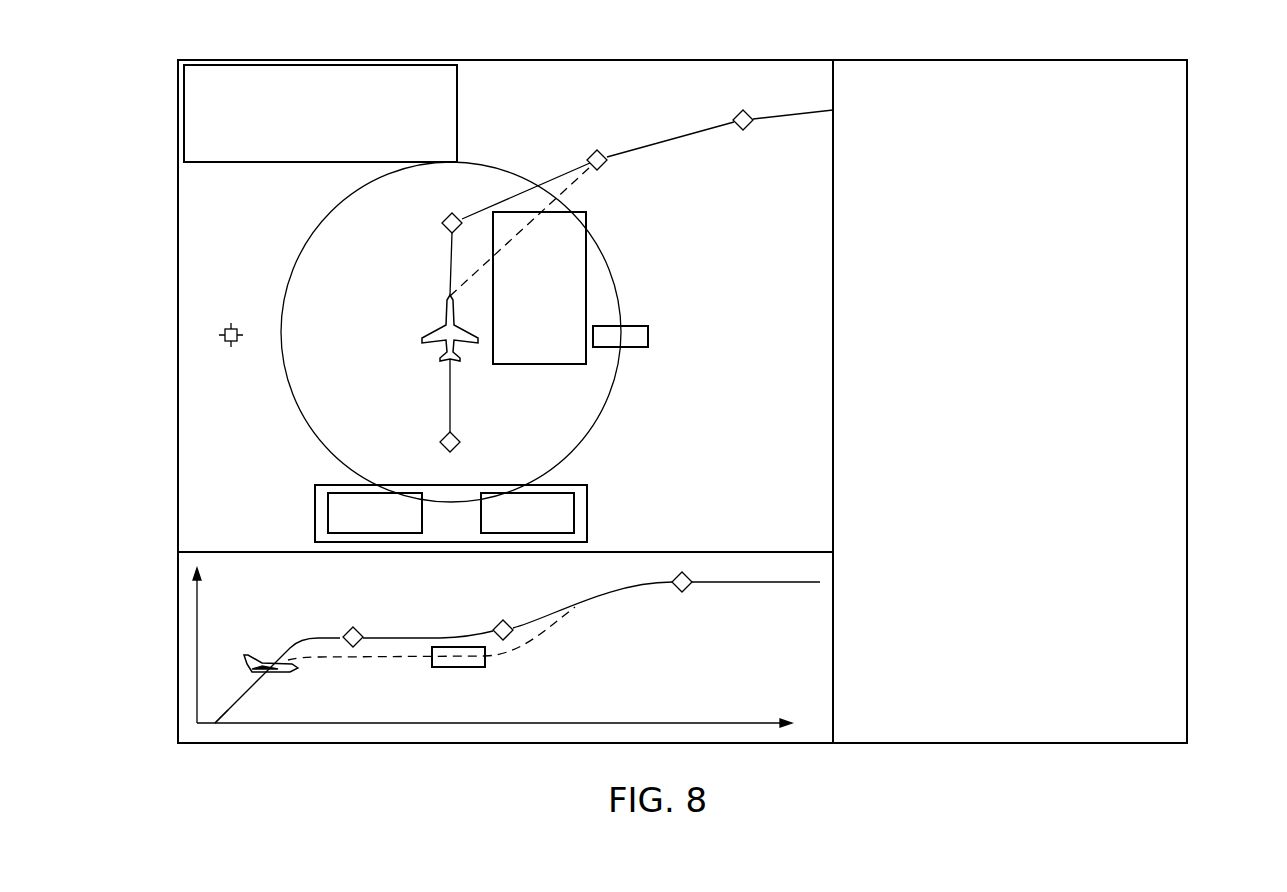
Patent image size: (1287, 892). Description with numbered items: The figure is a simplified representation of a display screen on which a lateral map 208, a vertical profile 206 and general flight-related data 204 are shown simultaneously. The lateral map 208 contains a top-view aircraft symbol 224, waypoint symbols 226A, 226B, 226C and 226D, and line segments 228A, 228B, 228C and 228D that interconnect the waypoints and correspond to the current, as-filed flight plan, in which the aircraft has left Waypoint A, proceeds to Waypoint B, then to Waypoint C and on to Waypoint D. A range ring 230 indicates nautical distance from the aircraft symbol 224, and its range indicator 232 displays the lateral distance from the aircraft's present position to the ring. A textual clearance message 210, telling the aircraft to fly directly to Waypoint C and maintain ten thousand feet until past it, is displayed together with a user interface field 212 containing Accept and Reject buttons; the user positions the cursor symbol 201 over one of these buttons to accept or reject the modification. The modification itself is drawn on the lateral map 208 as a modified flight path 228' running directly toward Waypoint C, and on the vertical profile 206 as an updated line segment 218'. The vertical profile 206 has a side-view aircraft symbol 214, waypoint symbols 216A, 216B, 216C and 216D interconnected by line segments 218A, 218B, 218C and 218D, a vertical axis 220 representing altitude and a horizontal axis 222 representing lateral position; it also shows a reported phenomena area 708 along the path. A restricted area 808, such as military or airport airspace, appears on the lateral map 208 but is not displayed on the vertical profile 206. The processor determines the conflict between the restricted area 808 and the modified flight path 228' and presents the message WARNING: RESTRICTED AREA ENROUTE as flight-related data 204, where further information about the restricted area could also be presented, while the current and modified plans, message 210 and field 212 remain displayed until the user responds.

The lateral map 208 is at (512, 67).
The general flight-related data 204 is at (1180, 118).
The textual clearance message 210 is at (290, 163).
The range ring 230 is at (617, 291).
The cursor symbol 201 is at (236, 348).
The top-view aircraft symbol 224 is at (424, 334).
The line segment 228A is at (449, 392).
The waypoint symbol 226A is at (440, 442).
The waypoint symbol 226B is at (441, 223).
The line segment 228B is at (545, 183).
The waypoint symbol 226C is at (590, 152).
The line segment 228C is at (670, 140).
The waypoint symbol 226D is at (736, 113).
The line segment 228D is at (795, 115).
The modified flight path 228' is at (547, 232).
The restricted area 808 is at (540, 365).
The range indicator 232 is at (649, 337).
The user interface field 212 is at (588, 506).
The vertical profile 206 is at (178, 655).
The vertical axis 220 is at (197, 606).
The horizontal axis 222 is at (660, 722).
The line segment 218A is at (300, 641).
The waypoint symbol 216A is at (228, 710).
The side-view aircraft symbol 214 is at (290, 672).
The waypoint symbol 216B is at (360, 628).
The line segment 218B is at (443, 637).
The waypoint symbol 216C is at (510, 622).
The line segment 218C is at (592, 603).
The waypoint symbol 216D is at (684, 593).
The line segment 218D is at (778, 583).
The updated line segment 218' is at (431, 658).
The weather related phenomena 708 is at (465, 668).